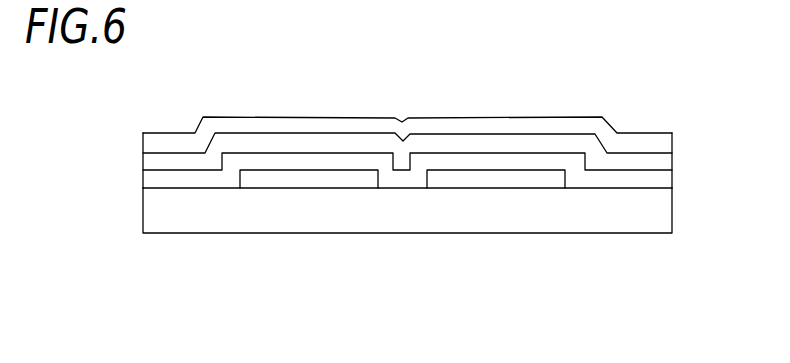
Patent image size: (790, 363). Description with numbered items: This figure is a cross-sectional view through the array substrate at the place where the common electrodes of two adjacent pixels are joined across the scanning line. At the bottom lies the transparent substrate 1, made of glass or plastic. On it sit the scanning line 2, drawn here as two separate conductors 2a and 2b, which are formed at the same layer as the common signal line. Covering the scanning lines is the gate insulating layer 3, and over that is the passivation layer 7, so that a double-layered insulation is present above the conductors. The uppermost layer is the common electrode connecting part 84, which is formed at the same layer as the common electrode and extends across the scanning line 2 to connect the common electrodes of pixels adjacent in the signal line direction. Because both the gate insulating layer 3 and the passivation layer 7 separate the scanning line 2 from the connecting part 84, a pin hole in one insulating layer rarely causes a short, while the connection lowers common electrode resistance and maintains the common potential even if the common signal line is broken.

The transparent substrate 1 is at (407, 247).
The scanning line 2 is at (402, 266).
The scanning line 2a is at (494, 238).
The scanning line 2b is at (309, 238).
The gate insulating layer 3 is at (455, 196).
The passivation layer 7 is at (453, 141).
The common electrode connecting part 84 is at (407, 110).